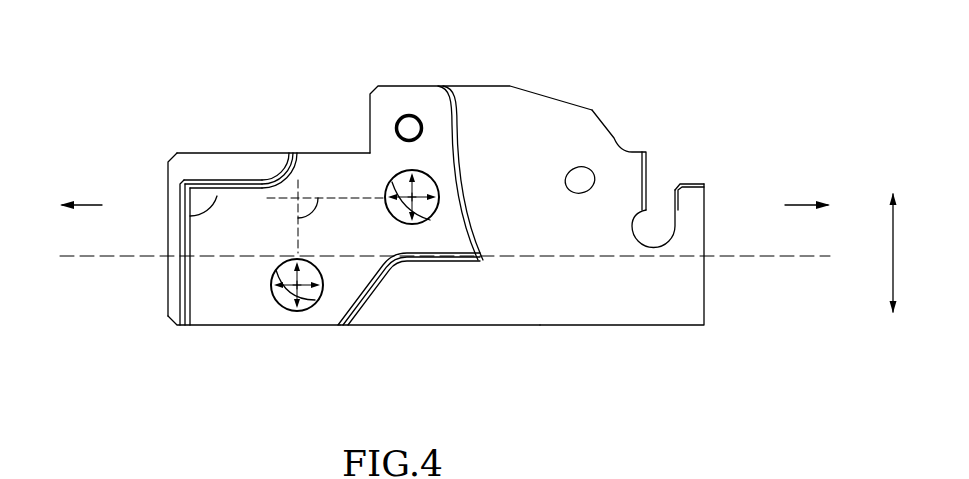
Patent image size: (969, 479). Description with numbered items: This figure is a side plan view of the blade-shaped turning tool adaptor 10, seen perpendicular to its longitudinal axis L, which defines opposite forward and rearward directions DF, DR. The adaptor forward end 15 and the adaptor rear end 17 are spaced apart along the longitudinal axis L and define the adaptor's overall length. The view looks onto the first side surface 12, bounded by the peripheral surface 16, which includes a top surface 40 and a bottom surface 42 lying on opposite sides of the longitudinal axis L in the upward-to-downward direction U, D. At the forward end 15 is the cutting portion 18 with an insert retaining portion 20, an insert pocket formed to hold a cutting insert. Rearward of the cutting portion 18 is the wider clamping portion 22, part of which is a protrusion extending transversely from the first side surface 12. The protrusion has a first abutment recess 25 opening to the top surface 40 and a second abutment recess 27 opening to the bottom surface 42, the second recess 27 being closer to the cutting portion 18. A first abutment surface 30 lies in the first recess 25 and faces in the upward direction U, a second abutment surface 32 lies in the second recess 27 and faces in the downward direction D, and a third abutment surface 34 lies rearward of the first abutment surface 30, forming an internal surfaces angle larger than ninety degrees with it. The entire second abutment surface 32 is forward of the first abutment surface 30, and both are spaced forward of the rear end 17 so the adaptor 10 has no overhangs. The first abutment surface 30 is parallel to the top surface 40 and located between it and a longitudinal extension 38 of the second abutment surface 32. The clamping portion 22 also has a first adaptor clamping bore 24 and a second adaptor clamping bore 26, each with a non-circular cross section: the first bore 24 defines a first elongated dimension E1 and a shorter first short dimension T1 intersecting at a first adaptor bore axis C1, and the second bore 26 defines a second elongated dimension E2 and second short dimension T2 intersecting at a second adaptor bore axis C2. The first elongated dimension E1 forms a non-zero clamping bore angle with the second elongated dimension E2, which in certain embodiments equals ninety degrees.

The turning tool adaptor 10 is at (248, 104).
The first side surface 12 is at (538, 305).
The adaptor forward end 15 is at (711, 213).
The peripheral surface 16 is at (470, 86).
The adaptor rear end 17 is at (168, 182).
The cutting portion 18 is at (643, 105).
The insert retaining portion 20 is at (690, 154).
The clamping portion 22 is at (298, 107).
The first adaptor clamping bore 24 is at (436, 165).
The first abutment recess 25 is at (255, 165).
The second adaptor clamping bore 26 is at (279, 319).
The second abutment recess 27 is at (401, 290).
The first abutment surface 30 is at (226, 178).
The second abutment surface 32 is at (420, 262).
The third abutment surface 34 is at (177, 203).
The longitudinal extension 38 is at (220, 263).
The top surface 40 is at (282, 150).
The bottom surface 42 is at (215, 327).
The first short dimension T1 is at (425, 222).
The second short dimension T2 is at (293, 278).
The first adaptor bore axis C1 is at (412, 197).
The second adaptor bore axis C2 is at (299, 292).
The first elongated dimension E1 is at (424, 218).
The second elongated dimension E2 is at (293, 283).
The longitudinal axis L is at (798, 256).
The rearward direction DR is at (67, 217).
The forward direction DF is at (825, 215).
The upward direction U is at (894, 240).
The downward direction D is at (895, 323).